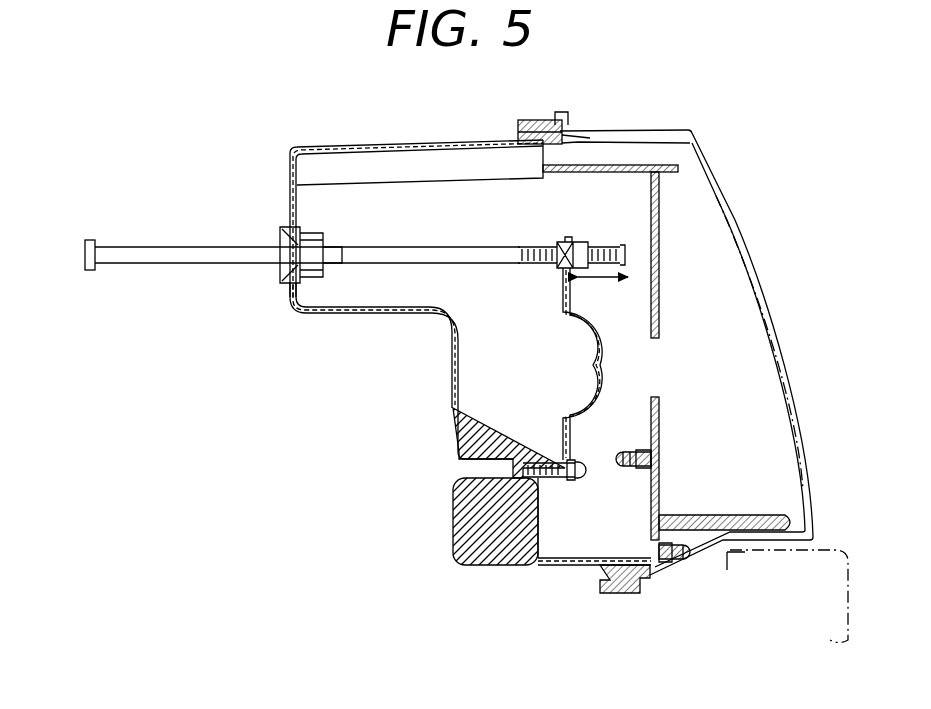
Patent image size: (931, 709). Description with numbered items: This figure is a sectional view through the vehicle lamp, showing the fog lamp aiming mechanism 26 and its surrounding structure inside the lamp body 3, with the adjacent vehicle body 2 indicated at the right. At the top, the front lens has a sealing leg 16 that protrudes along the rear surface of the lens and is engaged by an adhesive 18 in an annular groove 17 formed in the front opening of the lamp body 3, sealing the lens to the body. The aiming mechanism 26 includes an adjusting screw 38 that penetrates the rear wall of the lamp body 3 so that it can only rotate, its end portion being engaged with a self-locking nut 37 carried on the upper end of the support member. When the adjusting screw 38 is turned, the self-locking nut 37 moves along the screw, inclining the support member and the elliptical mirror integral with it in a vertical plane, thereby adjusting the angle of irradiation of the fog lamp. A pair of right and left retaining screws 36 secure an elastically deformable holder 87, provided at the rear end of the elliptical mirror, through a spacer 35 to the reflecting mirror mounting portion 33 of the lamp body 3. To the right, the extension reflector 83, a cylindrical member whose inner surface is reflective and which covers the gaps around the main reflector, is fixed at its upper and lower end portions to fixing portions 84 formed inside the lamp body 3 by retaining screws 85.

The vehicle body panel 2 is at (838, 548).
The lamp body 3 is at (455, 425).
The sealing leg 16 is at (697, 133).
The annular groove 17 is at (583, 134).
The adhesive 18 is at (537, 118).
The aiming mechanism 26 is at (377, 215).
The reflecting mirror mounting portion 33 is at (544, 458).
The spacer 35 is at (548, 486).
The retaining screws 36 is at (575, 480).
The self-locking nut 37 is at (576, 243).
The adjusting screw 38 is at (238, 245).
The extension reflector 83 is at (663, 230).
The fixing portions 84 is at (627, 470).
The retaining screws 85 is at (620, 449).
The elastically deformable holder 87 is at (603, 367).